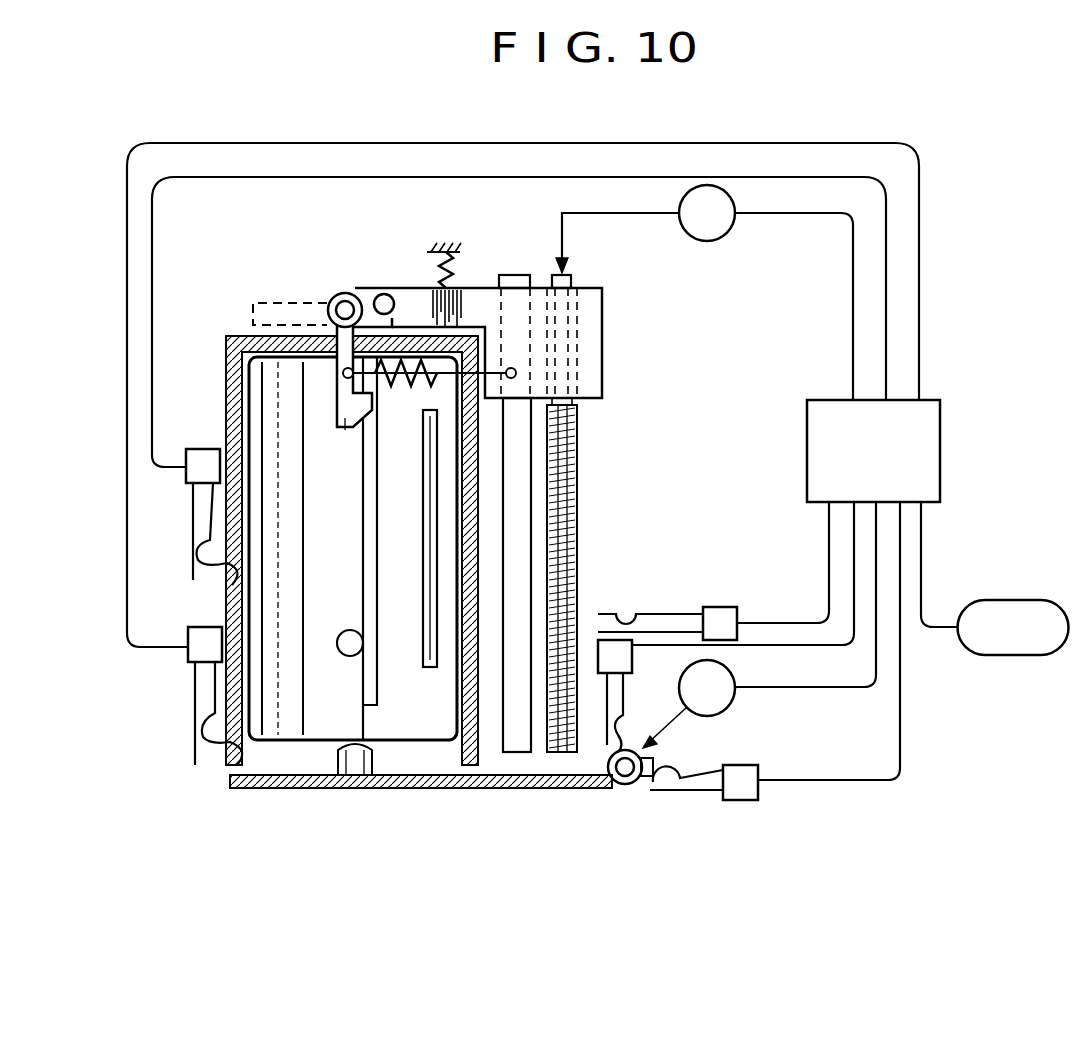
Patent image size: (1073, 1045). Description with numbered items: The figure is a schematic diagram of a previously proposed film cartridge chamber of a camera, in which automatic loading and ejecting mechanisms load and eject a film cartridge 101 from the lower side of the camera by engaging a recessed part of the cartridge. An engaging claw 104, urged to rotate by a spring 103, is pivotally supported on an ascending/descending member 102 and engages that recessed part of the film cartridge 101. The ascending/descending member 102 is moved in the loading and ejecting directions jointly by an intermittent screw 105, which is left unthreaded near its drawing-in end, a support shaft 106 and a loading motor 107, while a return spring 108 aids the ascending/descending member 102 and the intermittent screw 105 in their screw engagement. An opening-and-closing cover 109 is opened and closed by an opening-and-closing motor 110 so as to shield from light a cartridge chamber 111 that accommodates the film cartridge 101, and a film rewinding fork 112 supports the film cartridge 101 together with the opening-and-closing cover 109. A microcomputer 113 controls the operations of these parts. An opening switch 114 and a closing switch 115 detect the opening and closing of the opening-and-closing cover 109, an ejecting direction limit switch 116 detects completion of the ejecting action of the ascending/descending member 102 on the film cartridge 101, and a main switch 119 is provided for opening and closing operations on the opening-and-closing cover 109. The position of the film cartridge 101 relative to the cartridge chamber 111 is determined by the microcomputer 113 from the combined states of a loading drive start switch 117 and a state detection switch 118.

The film cartridge 101 is at (292, 728).
The ascending/descending member 102 is at (600, 318).
The spring 103 is at (410, 385).
The engaging claw 104 is at (345, 428).
The intermittent screw 105 is at (578, 468).
The support shaft 106 is at (535, 522).
The loading motor 107 is at (712, 242).
The return spring 108 is at (447, 288).
The opening-and-closing cover 109 is at (472, 790).
The opening-and-closing motor 110 is at (732, 707).
The cartridge chamber 111 is at (476, 578).
The film rewinding fork 112 is at (283, 303).
The microcomputer 113 is at (940, 418).
The opening switch (SW1) 114 is at (604, 660).
The closing switch (SW2) 115 is at (755, 800).
The ejecting direction limit switch (SW3) 116 is at (718, 606).
The loading drive start switch (SW4) 117 is at (196, 468).
The state detection switch (SW5) 118 is at (198, 648).
The main switch (SW6) 119 is at (1010, 655).